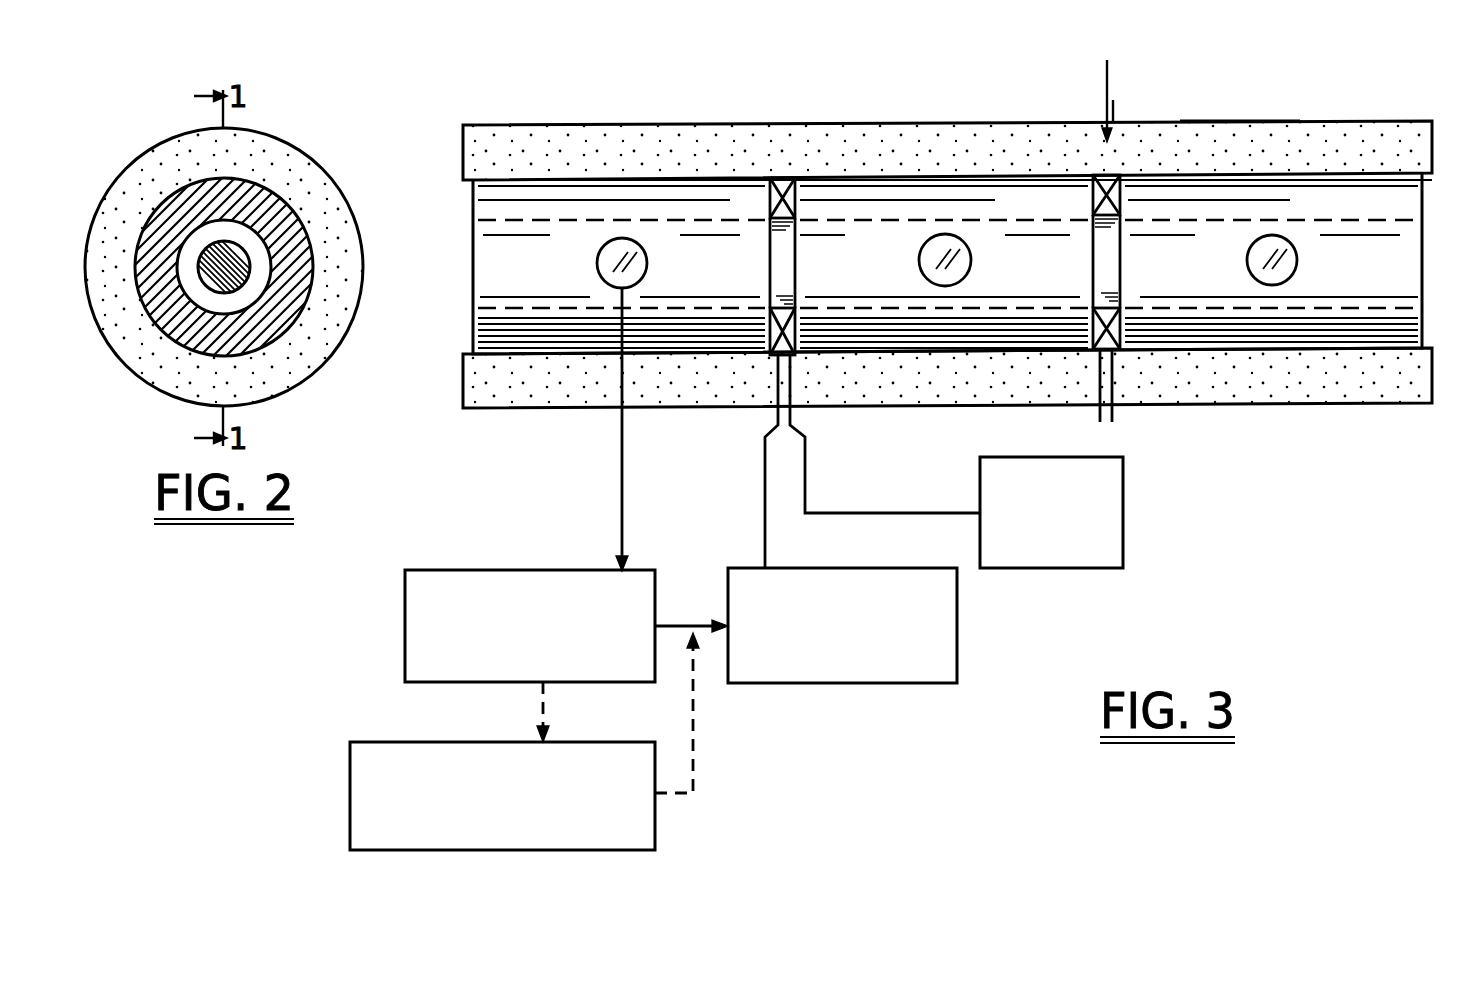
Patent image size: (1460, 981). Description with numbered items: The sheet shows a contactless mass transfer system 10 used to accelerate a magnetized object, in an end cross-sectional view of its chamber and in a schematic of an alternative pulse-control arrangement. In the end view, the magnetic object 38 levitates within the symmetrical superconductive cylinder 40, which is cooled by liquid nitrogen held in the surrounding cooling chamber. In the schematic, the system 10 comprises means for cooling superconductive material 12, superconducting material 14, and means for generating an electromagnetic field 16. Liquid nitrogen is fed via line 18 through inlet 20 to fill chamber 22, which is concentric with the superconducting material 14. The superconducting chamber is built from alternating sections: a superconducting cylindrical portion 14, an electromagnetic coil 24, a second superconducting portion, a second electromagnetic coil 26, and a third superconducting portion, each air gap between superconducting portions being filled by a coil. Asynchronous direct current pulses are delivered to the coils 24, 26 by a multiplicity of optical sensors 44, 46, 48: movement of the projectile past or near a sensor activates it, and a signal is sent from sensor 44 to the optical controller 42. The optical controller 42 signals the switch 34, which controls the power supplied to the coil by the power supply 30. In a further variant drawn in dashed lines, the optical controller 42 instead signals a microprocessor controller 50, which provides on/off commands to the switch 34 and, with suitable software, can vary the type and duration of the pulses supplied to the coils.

In FIG. 3, the contactless mass transfer system 10 is at (750, 58).
In FIG. 3, the means for cooling superconductive material 12 is at (1175, 130).
In FIG. 3, the superconducting material 14 is at (1303, 204).
In FIG. 3, the means for generating an electromagnetic field 16 is at (1107, 174).
In FIG. 3, the line 18 is at (1110, 82).
In FIG. 3, the inlet 20 is at (1104, 120).
In FIG. 3, the chamber 22 is at (1243, 138).
In FIG. 3, the electromagnetic coil 24 is at (797, 357).
In FIG. 3, the second electromagnetic coil 26 is at (1120, 351).
In FIG. 3, the power supply 30 is at (1124, 516).
In FIG. 3, the switch 34 is at (958, 622).
In FIG. 2, the magnetic object 38 is at (228, 241).
In FIG. 2, the symmetrical superconductive cylinder 40 is at (186, 184).
In FIG. 3, the optical controller 42 is at (405, 626).
In FIG. 3, the optical sensor 44 is at (642, 270).
In FIG. 3, the optical sensor 46 is at (965, 265).
In FIG. 3, the optical sensor 48 is at (1290, 262).
In FIG. 3, the microprocessor controller 50 is at (655, 818).